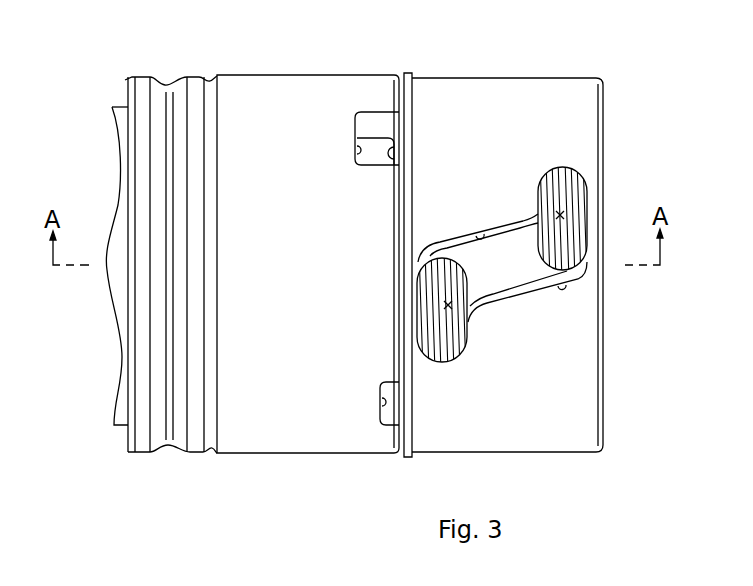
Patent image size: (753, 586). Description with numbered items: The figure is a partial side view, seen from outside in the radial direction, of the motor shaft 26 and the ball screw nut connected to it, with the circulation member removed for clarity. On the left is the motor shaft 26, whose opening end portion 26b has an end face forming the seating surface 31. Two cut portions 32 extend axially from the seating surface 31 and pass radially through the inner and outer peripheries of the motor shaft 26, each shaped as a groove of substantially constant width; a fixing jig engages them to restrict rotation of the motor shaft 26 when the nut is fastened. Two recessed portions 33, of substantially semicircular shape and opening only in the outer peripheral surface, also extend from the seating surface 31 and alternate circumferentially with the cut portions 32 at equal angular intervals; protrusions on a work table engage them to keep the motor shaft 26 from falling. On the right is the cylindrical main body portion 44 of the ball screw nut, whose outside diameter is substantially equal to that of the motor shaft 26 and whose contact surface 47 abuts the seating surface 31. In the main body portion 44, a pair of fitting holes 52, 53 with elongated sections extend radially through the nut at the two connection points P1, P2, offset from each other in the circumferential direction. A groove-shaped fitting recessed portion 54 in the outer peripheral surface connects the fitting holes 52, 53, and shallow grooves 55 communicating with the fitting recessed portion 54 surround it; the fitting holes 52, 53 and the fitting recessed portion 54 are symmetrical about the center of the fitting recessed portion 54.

The motor shaft 26 is at (112, 107).
The opening end portion 26b is at (300, 80).
The seating surface 31 is at (408, 88).
The cut portion 32 is at (356, 150).
The recessed portion 33 is at (382, 402).
The main body portion 44 is at (563, 78).
The contact surface 47 is at (390, 157).
The fitting hole 52 is at (555, 167).
The fitting hole 53 is at (452, 360).
The fitting recessed portion 54 is at (529, 279).
The shallow groove 55 is at (480, 236).
The connection point P1 is at (561, 215).
The connection point P2 is at (448, 305).